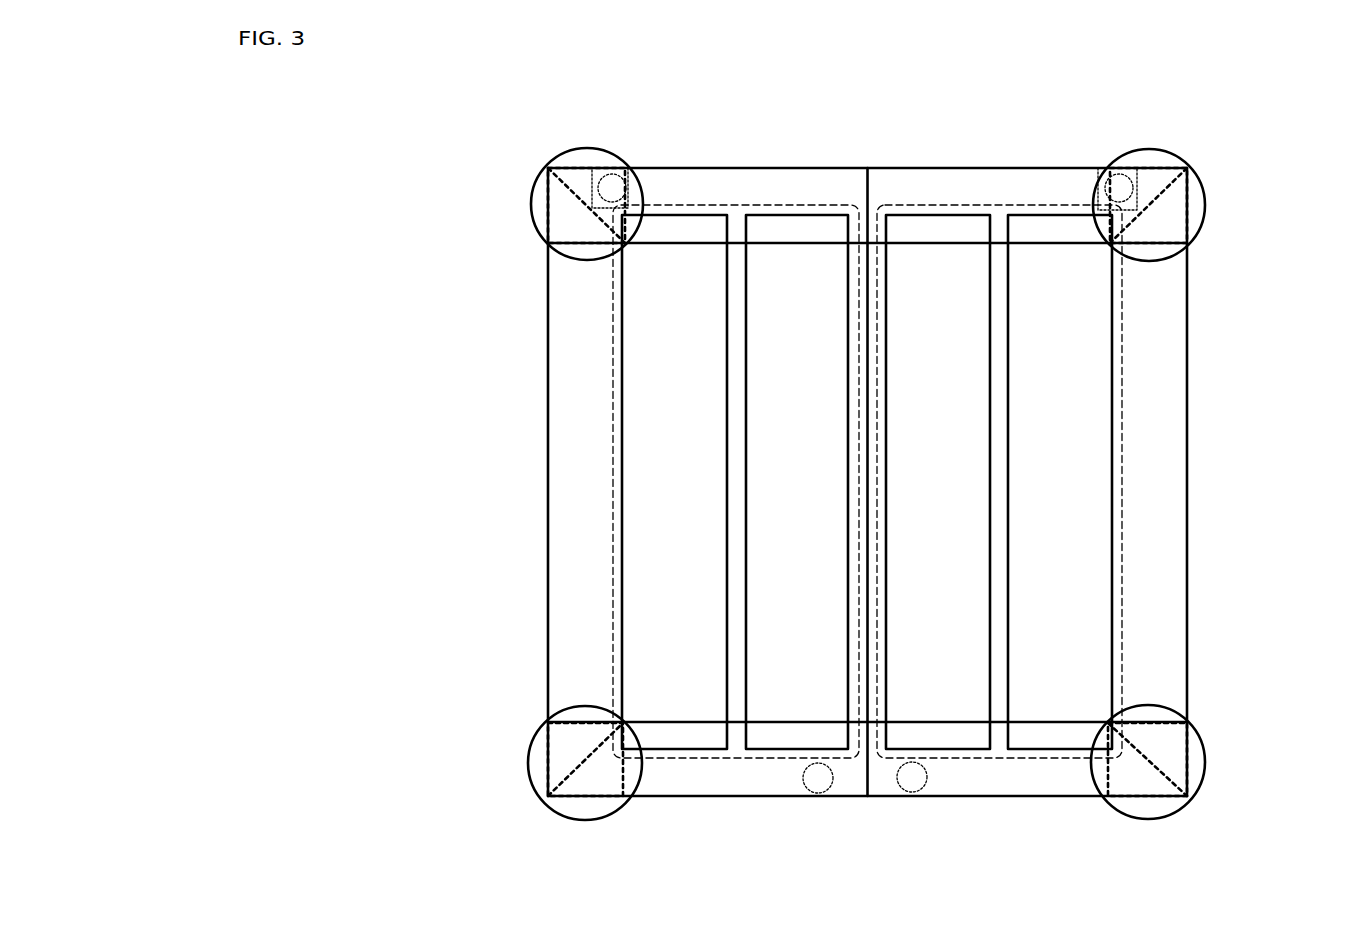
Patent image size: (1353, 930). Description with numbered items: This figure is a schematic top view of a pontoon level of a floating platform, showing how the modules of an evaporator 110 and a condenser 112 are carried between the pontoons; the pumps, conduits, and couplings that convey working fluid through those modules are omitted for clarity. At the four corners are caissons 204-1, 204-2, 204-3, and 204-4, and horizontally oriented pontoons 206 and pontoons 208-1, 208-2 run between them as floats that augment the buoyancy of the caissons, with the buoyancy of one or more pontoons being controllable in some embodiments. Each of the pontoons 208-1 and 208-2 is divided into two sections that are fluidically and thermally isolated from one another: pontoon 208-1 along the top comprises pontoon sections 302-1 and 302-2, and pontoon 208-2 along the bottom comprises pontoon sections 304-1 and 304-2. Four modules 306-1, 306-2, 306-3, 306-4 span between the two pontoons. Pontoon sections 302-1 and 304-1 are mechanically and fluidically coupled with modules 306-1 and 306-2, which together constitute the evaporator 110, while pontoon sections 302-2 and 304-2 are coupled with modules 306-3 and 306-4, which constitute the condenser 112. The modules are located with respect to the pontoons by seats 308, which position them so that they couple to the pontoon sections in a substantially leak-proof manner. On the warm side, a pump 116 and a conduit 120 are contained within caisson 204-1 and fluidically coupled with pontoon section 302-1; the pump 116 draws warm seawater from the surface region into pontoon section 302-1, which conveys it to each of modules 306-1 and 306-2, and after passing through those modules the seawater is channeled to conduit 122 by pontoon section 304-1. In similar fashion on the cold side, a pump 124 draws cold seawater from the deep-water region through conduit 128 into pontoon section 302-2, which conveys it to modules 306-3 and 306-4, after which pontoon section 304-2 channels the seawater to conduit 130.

The evaporator 110 is at (613, 570).
The condenser 112 is at (1121, 570).
The pump 116 is at (582, 172).
The conduit 120 is at (610, 190).
The conduit 122 is at (816, 779).
The pump 124 is at (1140, 173).
The conduit 128 is at (1118, 190).
The conduit 130 is at (915, 778).
The caisson 204-1 is at (532, 203).
The caisson 204-2 is at (1205, 205).
The caisson 204-3 is at (1205, 765).
The caisson 204-4 is at (530, 768).
The pontoon 206 is at (547, 468).
The pontoon 208-1 is at (802, 92).
The pontoon 208-2 is at (905, 843).
The pontoon section 302-1 is at (703, 186).
The pontoon section 302-2 is at (1031, 186).
The pontoon section 304-1 is at (703, 778).
The pontoon section 304-2 is at (1030, 778).
The module 306-1 is at (675, 468).
The module 306-2 is at (797, 468).
The module 306-3 is at (938, 468).
The module 306-4 is at (1060, 468).
The seat 308 is at (867, 482).